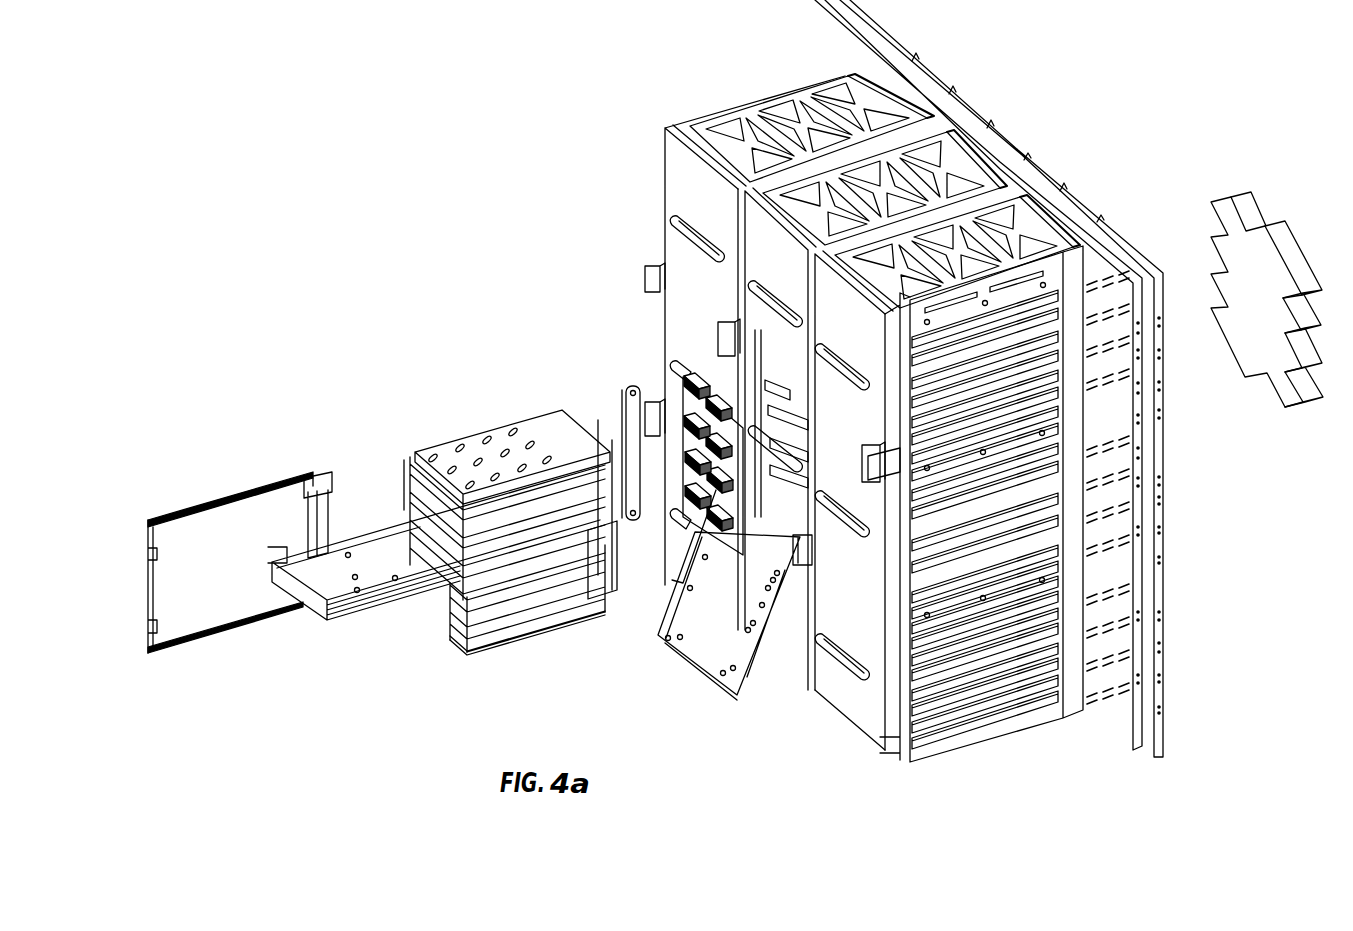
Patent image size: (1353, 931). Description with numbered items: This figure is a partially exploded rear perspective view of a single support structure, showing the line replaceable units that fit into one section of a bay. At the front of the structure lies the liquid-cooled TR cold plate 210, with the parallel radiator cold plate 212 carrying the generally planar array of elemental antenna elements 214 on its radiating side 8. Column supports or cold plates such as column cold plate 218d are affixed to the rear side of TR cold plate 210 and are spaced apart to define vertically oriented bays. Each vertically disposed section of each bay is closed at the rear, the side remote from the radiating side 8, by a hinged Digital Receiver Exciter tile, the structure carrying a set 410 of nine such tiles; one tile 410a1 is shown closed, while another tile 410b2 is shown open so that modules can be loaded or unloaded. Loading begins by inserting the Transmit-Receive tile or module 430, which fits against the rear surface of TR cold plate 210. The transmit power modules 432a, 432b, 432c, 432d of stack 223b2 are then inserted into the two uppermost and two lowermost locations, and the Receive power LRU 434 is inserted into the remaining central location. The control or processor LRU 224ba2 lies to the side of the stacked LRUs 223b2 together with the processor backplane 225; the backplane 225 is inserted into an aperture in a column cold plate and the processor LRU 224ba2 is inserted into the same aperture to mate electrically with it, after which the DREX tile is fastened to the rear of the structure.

The set of DREX tiles or modules 410 is at (576, 97).
The DREX tile or module 410a1 is at (676, 124).
The DREX tile or module 410b2 is at (760, 690).
The Transmit-Receive tile or module 430 is at (664, 357).
The processor backplane 225 is at (628, 390).
The power module 432a is at (513, 430).
The power module 432b is at (403, 503).
The power module 432c is at (520, 625).
The power module 432d is at (788, 868).
The Receive power LRU 434 is at (346, 624).
The control or processor LRU 224ba2 is at (257, 626).
The stack of transmit power LRUs 223b2 is at (499, 640).
The column support or cold plate 218d is at (1072, 689).
The radiator cold plate 212 is at (1167, 478).
The TR cold plate 210 is at (1143, 752).
The array of elemental antenna elements 214 is at (1222, 193).
The radiating side 8 is at (1200, 530).